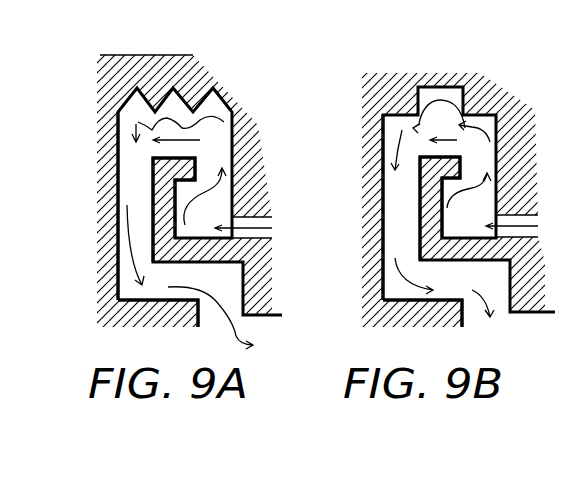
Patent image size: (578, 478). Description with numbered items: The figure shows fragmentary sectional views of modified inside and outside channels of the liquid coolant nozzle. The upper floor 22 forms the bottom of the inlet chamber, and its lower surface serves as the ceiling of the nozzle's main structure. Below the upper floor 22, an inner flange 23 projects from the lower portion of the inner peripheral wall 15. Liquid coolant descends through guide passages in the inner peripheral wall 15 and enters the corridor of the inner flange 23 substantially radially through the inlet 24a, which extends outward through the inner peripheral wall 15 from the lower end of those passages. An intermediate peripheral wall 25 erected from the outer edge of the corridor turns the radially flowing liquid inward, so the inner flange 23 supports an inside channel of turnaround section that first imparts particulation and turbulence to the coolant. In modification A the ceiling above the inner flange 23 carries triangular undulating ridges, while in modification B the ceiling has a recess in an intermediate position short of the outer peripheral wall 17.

In FIG. 9A, the inner peripheral wall 15 is at (258, 130).
In FIG. 9B, the inner peripheral wall 15 is at (518, 154).
In FIG. 9A, the outer peripheral wall 17 is at (102, 228).
In FIG. 9B, the outer peripheral wall 17 is at (366, 270).
In FIG. 9A, the upper floor 22 is at (114, 57).
In FIG. 9A, the inner flange 23 is at (143, 173).
In FIG. 9B, the inner flange 23 is at (410, 216).
In FIG. 9A, the inlet 24a is at (228, 222).
In FIG. 9A, the intermediate peripheral wall 25 is at (152, 192).